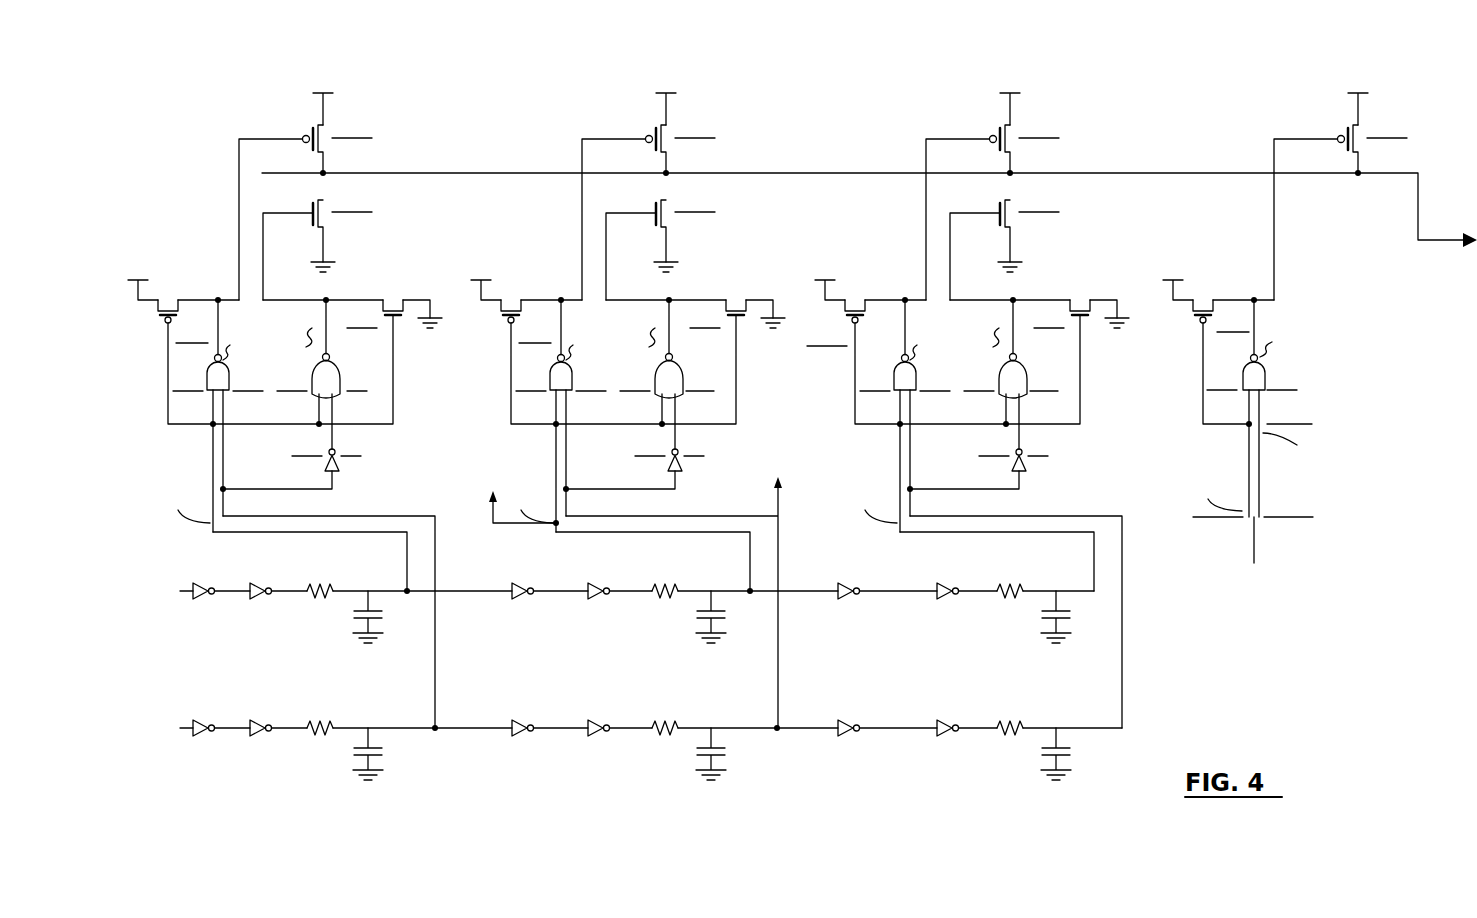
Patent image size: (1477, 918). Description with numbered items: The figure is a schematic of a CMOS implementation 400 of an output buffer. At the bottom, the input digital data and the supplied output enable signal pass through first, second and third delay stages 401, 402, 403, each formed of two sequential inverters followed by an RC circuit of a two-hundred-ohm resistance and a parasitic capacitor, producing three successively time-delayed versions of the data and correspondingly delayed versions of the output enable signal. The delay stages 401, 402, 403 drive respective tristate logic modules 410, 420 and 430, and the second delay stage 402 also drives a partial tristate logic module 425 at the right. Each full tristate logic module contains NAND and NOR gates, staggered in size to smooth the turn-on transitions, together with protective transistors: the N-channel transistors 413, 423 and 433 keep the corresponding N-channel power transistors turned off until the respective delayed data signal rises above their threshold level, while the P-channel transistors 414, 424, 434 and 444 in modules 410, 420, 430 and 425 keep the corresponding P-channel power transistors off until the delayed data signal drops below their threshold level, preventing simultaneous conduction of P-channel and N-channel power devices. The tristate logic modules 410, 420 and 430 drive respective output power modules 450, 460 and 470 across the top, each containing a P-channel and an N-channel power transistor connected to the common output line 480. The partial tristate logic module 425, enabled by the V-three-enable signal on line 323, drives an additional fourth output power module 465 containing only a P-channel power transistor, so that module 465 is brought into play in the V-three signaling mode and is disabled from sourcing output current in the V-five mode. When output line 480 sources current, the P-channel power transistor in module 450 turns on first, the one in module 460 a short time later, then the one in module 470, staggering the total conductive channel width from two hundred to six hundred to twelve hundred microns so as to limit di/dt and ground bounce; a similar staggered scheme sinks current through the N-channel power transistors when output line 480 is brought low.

The CMOS implementation of output buffer 400 is at (796, 459).
The first delay stage 401 is at (163, 806).
The second delay stage 402 is at (750, 806).
The third delay stage 403 is at (936, 704).
The tristate logic module 410 is at (278, 389).
The N-channel transistor 413 is at (393, 297).
The P-channel transistor 414 is at (170, 297).
The tristate logic module 420 is at (621, 389).
The N-channel transistor 423 is at (732, 284).
The P-channel transistor 424 is at (524, 286).
The partial tristate logic module 425 is at (1242, 382).
The tristate logic module 430 is at (965, 389).
The N-channel transistor 433 is at (1076, 284).
The P-channel transistor 434 is at (868, 286).
The P-channel transistor 444 is at (1205, 297).
The output power module 450 is at (222, 199).
The output power module 460 is at (610, 182).
The output power module 465 is at (1341, 189).
The output power module 470 is at (954, 182).
The output line 480 is at (411, 172).
The V3EN signal line 323 is at (1255, 541).